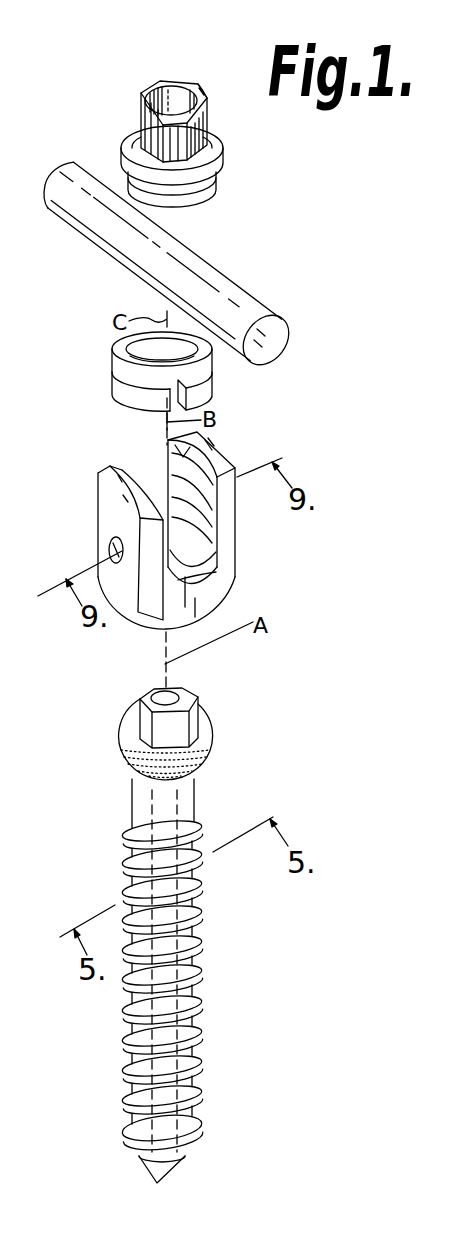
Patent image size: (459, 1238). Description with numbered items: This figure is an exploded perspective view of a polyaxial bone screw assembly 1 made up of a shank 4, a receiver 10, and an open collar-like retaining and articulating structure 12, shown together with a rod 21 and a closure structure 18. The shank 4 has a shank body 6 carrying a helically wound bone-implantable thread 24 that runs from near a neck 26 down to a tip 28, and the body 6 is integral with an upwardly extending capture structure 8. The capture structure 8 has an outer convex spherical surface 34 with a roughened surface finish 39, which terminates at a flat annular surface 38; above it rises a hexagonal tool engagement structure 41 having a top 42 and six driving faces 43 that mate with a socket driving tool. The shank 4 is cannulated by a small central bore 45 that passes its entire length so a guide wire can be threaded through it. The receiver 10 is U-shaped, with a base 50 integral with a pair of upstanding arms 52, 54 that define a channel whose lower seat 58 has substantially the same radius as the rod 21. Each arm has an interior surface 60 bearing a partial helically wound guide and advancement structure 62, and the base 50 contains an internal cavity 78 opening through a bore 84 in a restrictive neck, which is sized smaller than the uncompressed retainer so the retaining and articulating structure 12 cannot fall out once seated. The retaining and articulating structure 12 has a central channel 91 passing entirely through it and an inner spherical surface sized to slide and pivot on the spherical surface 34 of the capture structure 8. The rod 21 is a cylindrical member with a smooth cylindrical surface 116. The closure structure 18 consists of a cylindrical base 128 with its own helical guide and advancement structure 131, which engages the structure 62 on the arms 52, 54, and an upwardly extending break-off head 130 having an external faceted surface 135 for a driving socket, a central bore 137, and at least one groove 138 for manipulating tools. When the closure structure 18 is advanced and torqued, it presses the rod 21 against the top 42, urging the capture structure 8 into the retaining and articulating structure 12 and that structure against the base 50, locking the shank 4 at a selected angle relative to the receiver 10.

The polyaxial bone screw assembly 1 is at (80, 478).
The shank 4 is at (158, 988).
The shank body 6 is at (184, 985).
The capture structure 8 is at (160, 714).
The receiver 10 is at (192, 525).
The retaining and articulating structure 12 is at (118, 373).
The closure structure 18 is at (141, 112).
The rod 21 is at (179, 267).
The thread 24 is at (203, 971).
The neck 26 is at (132, 796).
The tip 28 is at (170, 1182).
The spherical surface 34 is at (212, 744).
The annular surface 38 is at (205, 714).
The surface finish 39 is at (124, 744).
The tool engagement structure 41 is at (197, 703).
The top 42 is at (182, 690).
The driving faces 43 is at (165, 738).
The central bore 45 is at (158, 692).
The base 50 is at (233, 588).
The arm 52 is at (98, 520).
The arm 54 is at (234, 521).
The lower seat 58 is at (216, 561).
The interior surface 60 is at (170, 460).
The guide and advancement structure 62 is at (177, 473).
The cavity 78 is at (187, 563).
The bore 84 is at (203, 604).
The central channel 91 is at (151, 358).
The cylindrical surface 116 is at (195, 258).
The base 128 is at (222, 158).
The break-off head 130 is at (207, 115).
The guide and advancement structure 131 is at (215, 183).
The external faceted surface 135 is at (150, 143).
The central bore 137 is at (170, 92).
The groove 138 is at (204, 99).